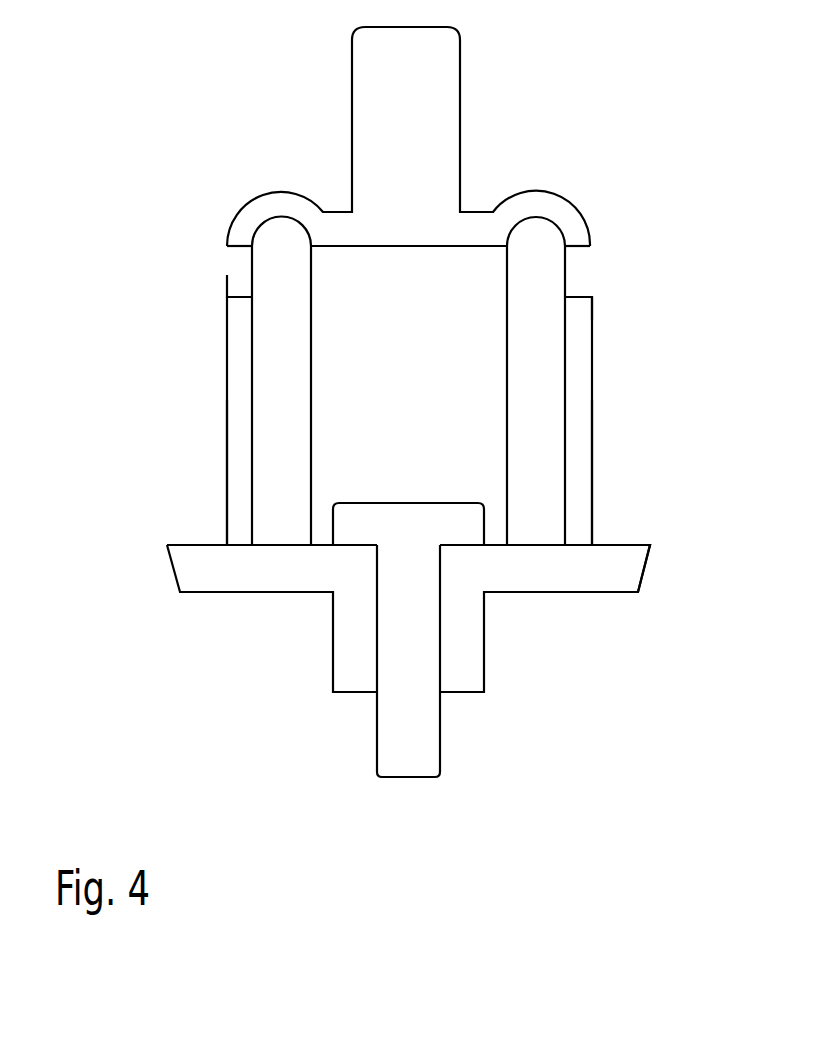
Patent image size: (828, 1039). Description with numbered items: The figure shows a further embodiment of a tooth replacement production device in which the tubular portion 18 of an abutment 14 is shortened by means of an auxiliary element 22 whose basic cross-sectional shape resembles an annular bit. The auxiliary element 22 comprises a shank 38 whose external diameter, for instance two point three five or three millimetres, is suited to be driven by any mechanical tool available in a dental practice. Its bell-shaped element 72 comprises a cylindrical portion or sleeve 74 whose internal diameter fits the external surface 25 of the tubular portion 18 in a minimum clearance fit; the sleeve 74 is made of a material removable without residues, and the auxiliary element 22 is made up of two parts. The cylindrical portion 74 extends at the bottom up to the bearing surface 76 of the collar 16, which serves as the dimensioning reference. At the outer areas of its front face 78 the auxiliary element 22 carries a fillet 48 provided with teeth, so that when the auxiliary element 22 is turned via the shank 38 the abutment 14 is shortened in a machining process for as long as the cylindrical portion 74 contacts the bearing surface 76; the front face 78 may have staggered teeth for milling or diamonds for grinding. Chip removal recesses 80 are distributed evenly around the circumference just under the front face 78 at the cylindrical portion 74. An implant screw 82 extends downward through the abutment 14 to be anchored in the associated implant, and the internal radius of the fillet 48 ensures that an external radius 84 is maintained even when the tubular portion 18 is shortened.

The abutment 14 is at (258, 664).
The collar 16 is at (605, 578).
The tubular portion 18 is at (548, 373).
The auxiliary element 22 is at (220, 366).
The external surface 25 is at (565, 272).
The shank 38 is at (367, 78).
The fillet 48 is at (535, 233).
The bell-shaped element 72 is at (220, 462).
The cylindrical portion 74 is at (580, 478).
The bearing surface 76 is at (640, 539).
The front face 78 is at (406, 254).
The chip removal recesses 80 is at (232, 272).
The implant screw 82 is at (427, 748).
The external radius 84 is at (285, 210).